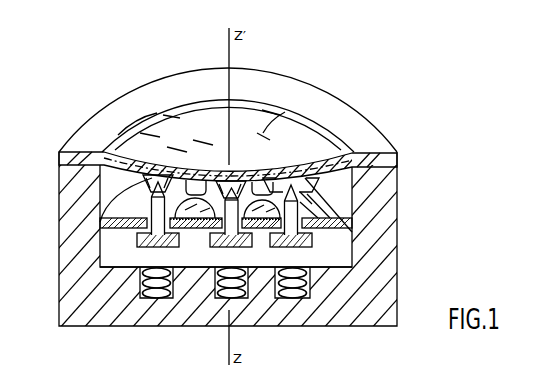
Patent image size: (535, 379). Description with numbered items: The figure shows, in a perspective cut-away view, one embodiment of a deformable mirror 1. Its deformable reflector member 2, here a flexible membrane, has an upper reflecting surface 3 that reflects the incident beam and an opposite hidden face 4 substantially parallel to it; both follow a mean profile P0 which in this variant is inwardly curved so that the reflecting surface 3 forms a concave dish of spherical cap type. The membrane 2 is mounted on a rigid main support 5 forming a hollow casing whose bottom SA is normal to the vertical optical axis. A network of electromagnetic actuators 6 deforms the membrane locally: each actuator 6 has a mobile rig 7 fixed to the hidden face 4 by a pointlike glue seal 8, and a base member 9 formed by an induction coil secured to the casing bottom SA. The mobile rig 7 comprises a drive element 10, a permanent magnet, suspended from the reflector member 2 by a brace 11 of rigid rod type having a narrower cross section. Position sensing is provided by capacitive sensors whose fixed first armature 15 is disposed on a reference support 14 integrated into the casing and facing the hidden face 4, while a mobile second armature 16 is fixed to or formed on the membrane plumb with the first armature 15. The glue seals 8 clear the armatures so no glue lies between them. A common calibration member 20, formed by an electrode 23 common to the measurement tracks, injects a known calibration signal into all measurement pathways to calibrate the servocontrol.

The deformable mirror 1 is at (362, 66).
The deformable reflector member 2 is at (325, 116).
The reflecting surface 3 is at (315, 143).
The hidden face 4 is at (244, 150).
The main support 5 is at (70, 265).
The actuator 6 is at (135, 277).
The mobile rig 7 is at (299, 207).
The glue seal 8 is at (306, 183).
The base member 9 is at (152, 300).
The drive element 10 is at (305, 242).
The brace 11 is at (300, 231).
The reference support 14 is at (195, 228).
The first armature 15 is at (165, 182).
The second armature 16 is at (207, 182).
The common calibration member 20 is at (125, 206).
The electrode 23 is at (100, 228).
The bottom of the casing SA is at (340, 263).
The mean profile P0 is at (350, 138).